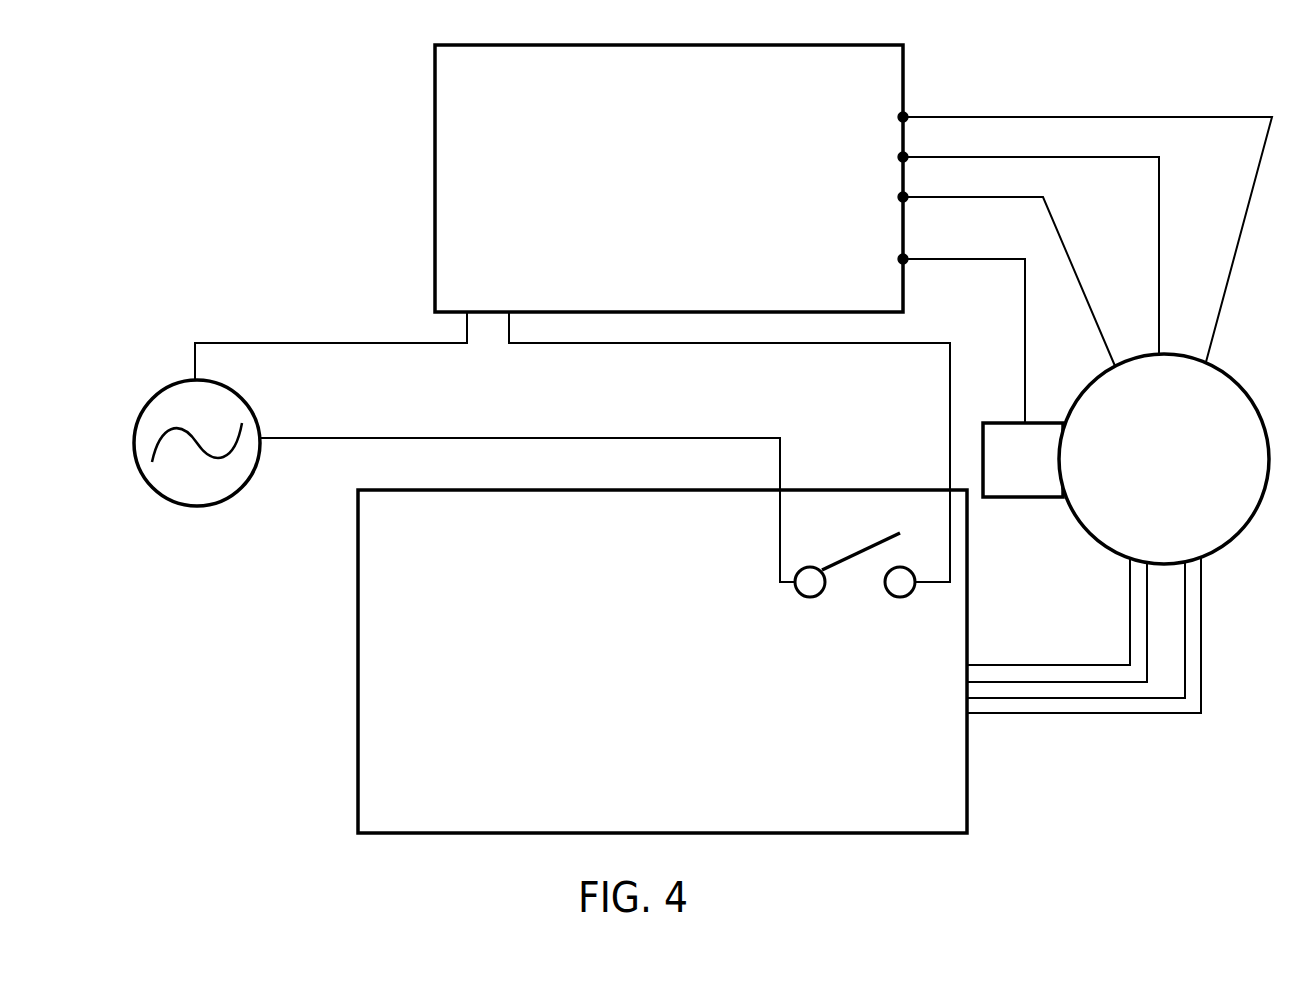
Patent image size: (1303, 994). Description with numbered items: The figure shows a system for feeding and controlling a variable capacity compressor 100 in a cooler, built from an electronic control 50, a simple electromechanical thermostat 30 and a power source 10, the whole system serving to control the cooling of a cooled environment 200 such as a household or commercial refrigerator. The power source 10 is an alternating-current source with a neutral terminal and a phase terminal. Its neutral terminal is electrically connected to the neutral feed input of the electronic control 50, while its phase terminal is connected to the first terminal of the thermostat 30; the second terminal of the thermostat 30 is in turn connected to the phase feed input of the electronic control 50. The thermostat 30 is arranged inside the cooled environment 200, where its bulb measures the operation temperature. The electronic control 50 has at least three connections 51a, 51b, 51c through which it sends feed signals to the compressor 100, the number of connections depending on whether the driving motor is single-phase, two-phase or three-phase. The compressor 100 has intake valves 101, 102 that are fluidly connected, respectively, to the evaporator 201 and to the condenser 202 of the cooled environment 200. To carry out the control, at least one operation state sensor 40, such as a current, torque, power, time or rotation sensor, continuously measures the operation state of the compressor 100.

The power source 10 is at (214, 462).
The thermostat 30 is at (855, 595).
The operation state sensor 40 is at (1023, 460).
The electronic control 50 is at (669, 178).
The connection 51a is at (1053, 231).
The connection 51b is at (997, 247).
The connection 51c is at (975, 273).
The variable capacity compressor 100 is at (1164, 459).
The intake valve 101 is at (1118, 579).
The intake valve 102 is at (1212, 578).
The cooled environment 200 is at (662, 661).
The evaporator 201 is at (1035, 620).
The condenser 202 is at (1062, 643).